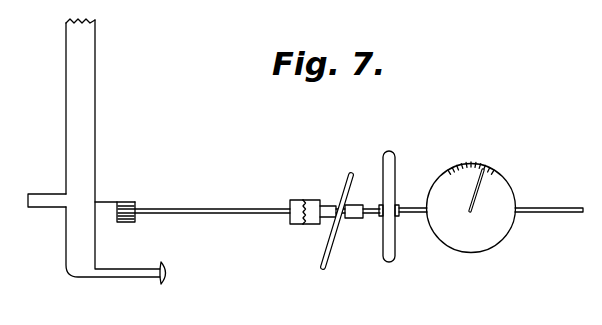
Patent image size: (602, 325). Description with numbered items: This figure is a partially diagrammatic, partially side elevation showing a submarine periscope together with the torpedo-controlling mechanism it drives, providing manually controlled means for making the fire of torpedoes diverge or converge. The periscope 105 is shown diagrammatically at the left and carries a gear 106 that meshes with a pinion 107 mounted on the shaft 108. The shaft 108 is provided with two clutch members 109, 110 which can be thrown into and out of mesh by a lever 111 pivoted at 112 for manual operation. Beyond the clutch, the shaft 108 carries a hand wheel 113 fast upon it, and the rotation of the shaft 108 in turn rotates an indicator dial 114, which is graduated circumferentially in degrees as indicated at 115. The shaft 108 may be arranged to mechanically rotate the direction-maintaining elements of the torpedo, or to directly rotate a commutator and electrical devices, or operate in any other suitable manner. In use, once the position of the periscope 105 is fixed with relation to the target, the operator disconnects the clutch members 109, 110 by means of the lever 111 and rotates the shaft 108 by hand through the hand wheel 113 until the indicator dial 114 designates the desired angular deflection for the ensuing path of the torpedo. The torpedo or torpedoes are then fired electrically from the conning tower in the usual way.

The periscope 105 is at (97, 151).
The gear 106 is at (123, 197).
The pinion 107 is at (127, 222).
The shaft 108 is at (215, 209).
The clutch member 109 is at (299, 221).
The clutch member 110 is at (312, 205).
The lever 111 is at (338, 229).
The pivot 112 is at (323, 270).
The hand wheel 113 is at (390, 174).
The indicator dial 114 is at (480, 194).
The graduations in degrees 115 is at (498, 176).